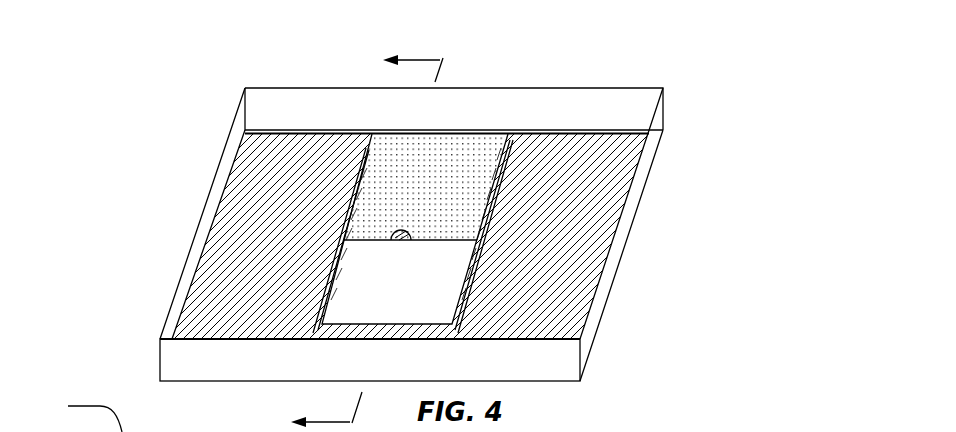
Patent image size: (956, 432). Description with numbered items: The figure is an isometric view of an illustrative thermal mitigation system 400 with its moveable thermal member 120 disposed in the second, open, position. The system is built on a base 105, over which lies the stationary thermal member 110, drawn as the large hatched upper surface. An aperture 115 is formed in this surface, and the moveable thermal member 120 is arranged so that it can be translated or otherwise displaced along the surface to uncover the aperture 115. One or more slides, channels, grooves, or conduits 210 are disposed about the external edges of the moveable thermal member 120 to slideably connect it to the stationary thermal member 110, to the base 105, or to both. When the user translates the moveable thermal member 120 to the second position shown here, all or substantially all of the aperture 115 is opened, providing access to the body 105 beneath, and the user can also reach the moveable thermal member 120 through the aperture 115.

The thermal mitigation system 400 is at (668, 61).
The base 105 is at (609, 294).
The stationary thermal member 110 is at (278, 230).
The aperture 115 is at (375, 295).
The moveable thermal member 120 is at (412, 215).
The slides, channels, grooves, or conduits 210 is at (506, 138).